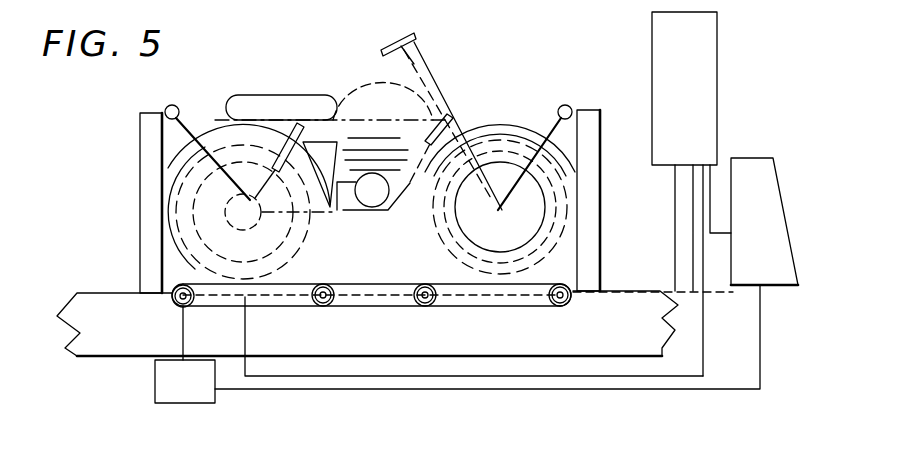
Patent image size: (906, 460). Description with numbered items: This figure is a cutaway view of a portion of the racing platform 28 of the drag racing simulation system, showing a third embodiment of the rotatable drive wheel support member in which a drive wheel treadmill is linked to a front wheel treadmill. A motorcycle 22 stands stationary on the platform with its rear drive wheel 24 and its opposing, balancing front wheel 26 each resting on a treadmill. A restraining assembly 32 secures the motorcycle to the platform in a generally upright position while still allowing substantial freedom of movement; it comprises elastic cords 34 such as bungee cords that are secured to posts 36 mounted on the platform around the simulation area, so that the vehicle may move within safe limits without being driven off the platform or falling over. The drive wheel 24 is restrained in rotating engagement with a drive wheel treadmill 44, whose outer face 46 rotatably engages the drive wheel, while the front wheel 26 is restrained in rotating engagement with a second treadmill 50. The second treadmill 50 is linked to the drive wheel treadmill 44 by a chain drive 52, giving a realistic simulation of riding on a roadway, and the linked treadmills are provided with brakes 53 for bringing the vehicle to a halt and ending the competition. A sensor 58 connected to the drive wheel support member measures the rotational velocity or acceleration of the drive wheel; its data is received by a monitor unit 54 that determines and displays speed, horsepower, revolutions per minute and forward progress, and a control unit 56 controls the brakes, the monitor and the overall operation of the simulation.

The motorcycle 22 is at (316, 91).
The drive wheel 24 is at (230, 152).
The front wheel 26 is at (503, 158).
The racing platform 28 is at (100, 357).
The restraining assembly 32 is at (152, 106).
The elastic cords 34 is at (185, 133).
The posts 36 is at (140, 210).
The drive wheel treadmill 44 is at (275, 312).
The outer face 46 is at (305, 283).
The second treadmill 50 is at (528, 308).
The chain drive 52 is at (392, 285).
The brakes 53 is at (178, 289).
The monitor unit 54 is at (760, 158).
The control unit 56 is at (717, 42).
The sensor 58 is at (160, 403).